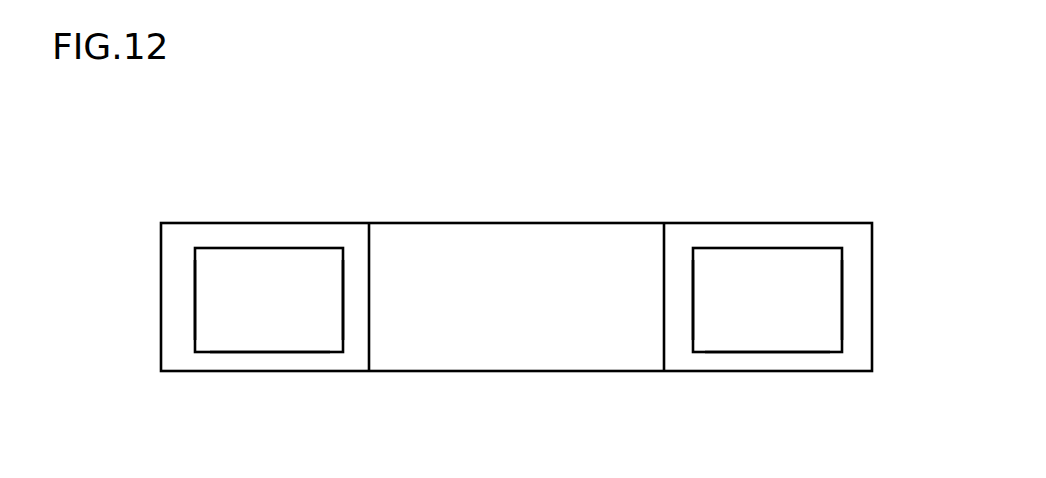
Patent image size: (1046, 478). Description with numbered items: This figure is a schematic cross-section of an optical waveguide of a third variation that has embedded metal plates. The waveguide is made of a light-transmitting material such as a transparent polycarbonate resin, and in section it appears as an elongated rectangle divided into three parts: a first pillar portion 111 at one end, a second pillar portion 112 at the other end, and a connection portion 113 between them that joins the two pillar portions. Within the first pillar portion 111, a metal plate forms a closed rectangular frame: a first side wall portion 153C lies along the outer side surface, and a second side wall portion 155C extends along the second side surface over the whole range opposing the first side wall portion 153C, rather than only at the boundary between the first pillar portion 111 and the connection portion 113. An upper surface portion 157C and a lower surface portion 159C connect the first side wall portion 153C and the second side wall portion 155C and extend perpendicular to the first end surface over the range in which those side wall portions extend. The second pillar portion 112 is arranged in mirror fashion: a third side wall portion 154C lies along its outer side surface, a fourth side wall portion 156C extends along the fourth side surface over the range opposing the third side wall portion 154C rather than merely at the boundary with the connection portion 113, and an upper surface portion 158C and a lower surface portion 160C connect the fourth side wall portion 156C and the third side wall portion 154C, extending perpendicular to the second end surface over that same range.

The first pillar portion 111 is at (853, 350).
The second pillar portion 112 is at (179, 350).
The connection portion 113 is at (528, 353).
The first side wall portion 153C is at (842, 292).
The third side wall portion 154C is at (195, 298).
The second side wall portion 155C is at (693, 278).
The fourth side wall portion 156C is at (343, 288).
The upper surface portion 157C is at (753, 248).
The upper surface portion 158C is at (237, 248).
The lower surface portion 159C is at (723, 352).
The lower surface portion 160C is at (262, 352).